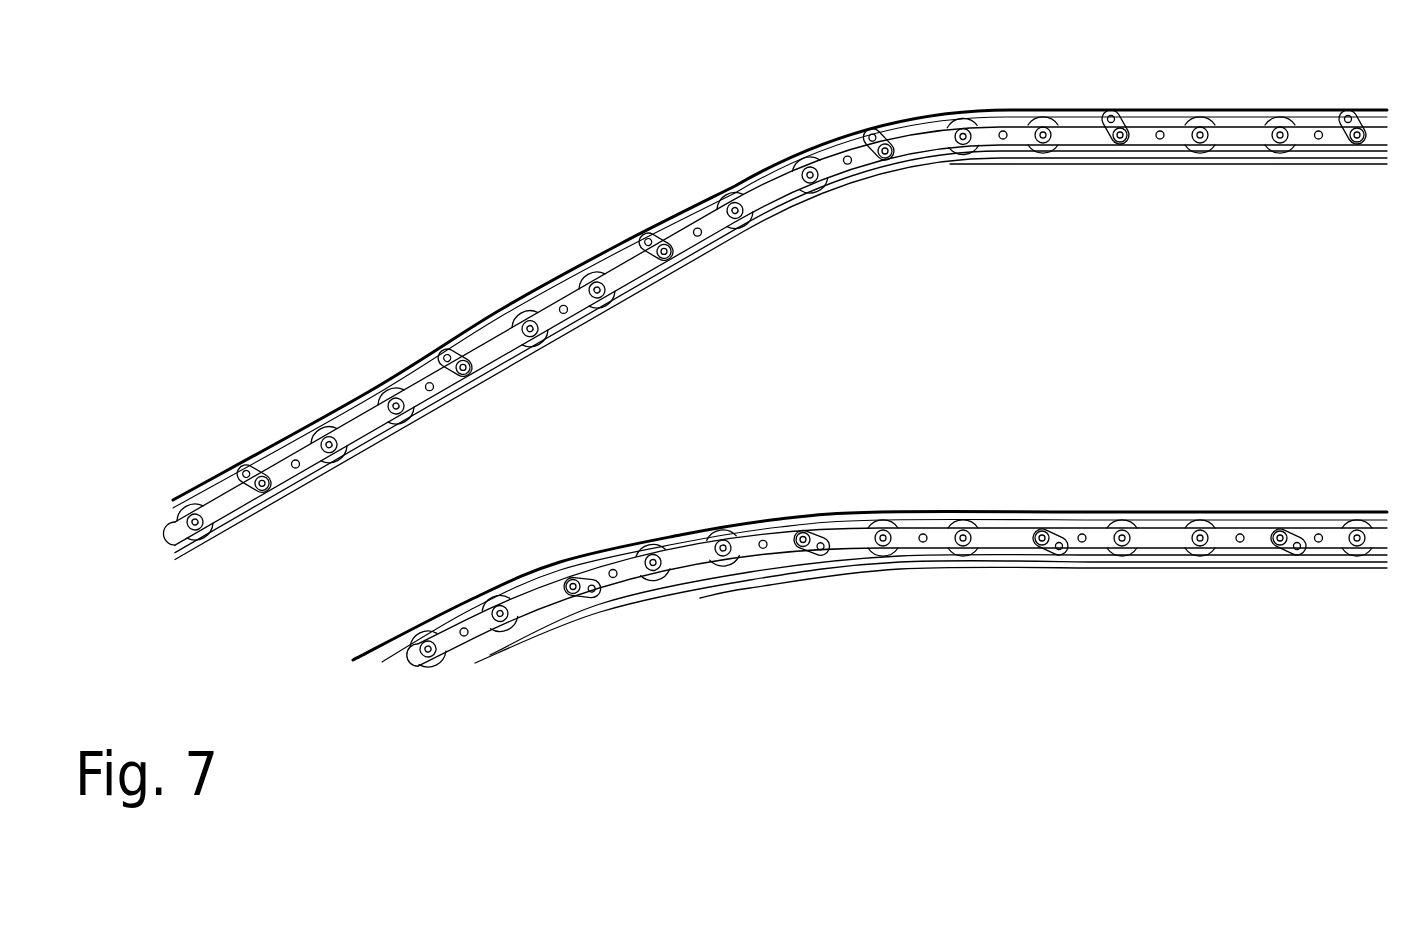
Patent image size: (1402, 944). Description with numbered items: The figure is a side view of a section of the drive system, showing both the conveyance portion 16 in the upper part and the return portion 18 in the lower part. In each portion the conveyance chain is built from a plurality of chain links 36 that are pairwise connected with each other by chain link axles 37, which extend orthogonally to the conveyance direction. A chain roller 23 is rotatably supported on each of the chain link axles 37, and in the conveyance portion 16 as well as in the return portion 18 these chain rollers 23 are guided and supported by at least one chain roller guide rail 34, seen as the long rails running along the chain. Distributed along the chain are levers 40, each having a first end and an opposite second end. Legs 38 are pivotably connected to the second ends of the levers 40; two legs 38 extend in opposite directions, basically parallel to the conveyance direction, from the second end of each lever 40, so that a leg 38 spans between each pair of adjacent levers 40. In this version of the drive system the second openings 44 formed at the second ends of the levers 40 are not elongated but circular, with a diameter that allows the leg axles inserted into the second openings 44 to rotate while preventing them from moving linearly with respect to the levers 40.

The conveyance portion 16 is at (456, 262).
The return portion 18 is at (656, 645).
The chain roller 23 is at (972, 153).
The chain roller guide rail 34 is at (795, 155).
The chain link 36 is at (828, 172).
The chain link axle 37 is at (578, 578).
The leg 38 is at (920, 137).
The lever 40 is at (1112, 118).
The second opening 44 is at (868, 137).